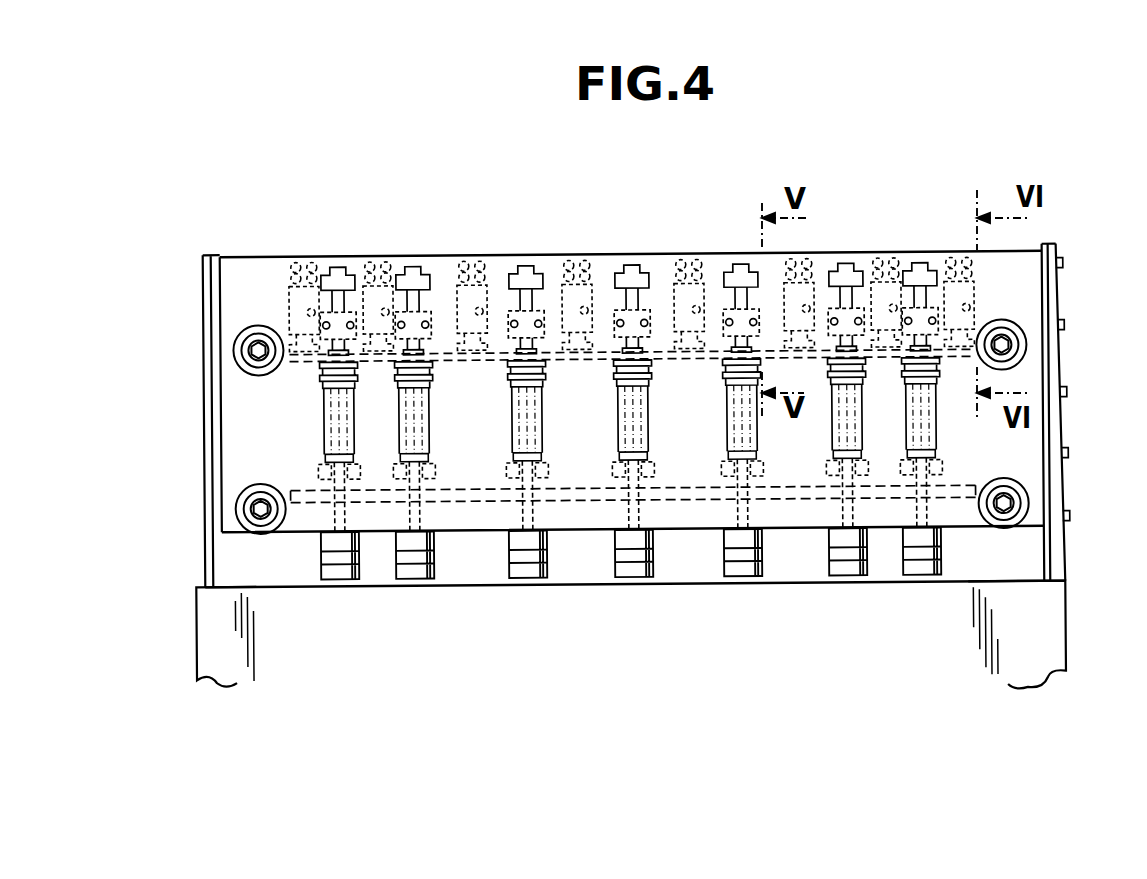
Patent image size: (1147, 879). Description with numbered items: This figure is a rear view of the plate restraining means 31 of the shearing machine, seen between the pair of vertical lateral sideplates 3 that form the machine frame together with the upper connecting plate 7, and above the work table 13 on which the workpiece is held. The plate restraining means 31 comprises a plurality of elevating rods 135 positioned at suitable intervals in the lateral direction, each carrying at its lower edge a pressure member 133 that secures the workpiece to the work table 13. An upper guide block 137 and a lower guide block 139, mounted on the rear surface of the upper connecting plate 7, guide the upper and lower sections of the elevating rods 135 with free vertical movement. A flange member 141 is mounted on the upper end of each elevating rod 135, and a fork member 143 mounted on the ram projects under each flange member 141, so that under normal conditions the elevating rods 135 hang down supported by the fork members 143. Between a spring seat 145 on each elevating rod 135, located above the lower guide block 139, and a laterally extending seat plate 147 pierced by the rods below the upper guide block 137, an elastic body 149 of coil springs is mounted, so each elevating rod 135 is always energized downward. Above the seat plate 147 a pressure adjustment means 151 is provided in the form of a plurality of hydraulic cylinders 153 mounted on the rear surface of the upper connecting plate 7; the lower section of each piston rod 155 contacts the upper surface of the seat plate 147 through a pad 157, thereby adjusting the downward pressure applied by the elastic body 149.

The vertical lateral sideplate 3 is at (207, 374).
The upper connecting plate 7 is at (998, 468).
The work table 13 is at (1045, 647).
The plate restraining means 31 is at (588, 555).
The pressure member 133 is at (408, 578).
The elevating rod 135 is at (500, 535).
The upper guide block 137 is at (505, 262).
The lower guide block 139 is at (312, 490).
The flange member 141 is at (620, 286).
The fork member 143 is at (432, 290).
The spring seat 145 is at (512, 470).
The seat plate 147 is at (310, 350).
The elastic body 149 is at (612, 378).
The pressure adjustment means 151 is at (296, 323).
The hydraulic cylinder 153 is at (291, 285).
The piston rod 155 is at (300, 330).
The pad 157 is at (441, 366).